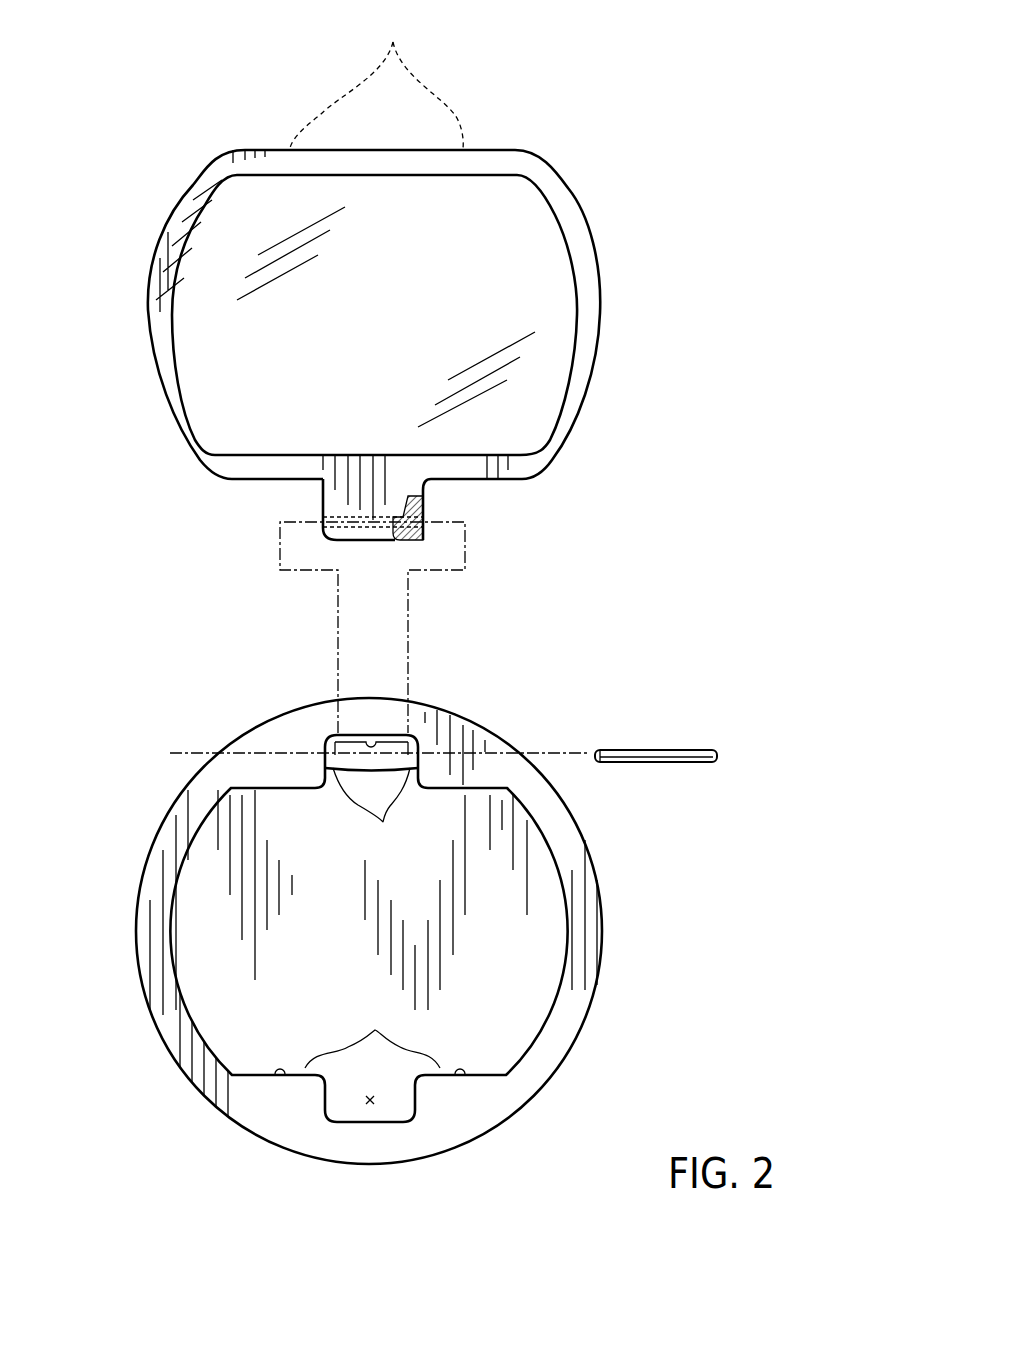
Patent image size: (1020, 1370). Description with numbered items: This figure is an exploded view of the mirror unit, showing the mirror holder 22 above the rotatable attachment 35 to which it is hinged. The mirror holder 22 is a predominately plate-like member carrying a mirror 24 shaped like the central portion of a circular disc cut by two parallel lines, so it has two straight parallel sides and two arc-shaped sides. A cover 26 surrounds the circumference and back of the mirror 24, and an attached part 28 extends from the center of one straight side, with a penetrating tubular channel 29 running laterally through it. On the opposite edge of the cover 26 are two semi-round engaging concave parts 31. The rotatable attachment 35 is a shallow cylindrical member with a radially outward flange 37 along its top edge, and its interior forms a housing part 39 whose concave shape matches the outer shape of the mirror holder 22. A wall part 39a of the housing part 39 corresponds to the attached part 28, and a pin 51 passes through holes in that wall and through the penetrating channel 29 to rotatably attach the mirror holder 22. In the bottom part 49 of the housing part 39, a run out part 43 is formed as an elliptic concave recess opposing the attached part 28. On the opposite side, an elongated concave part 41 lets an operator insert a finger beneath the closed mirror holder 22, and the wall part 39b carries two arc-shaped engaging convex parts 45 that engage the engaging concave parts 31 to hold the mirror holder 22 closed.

The mirror holder 22 is at (580, 172).
The mirror 24 is at (538, 260).
The cover 26 is at (583, 356).
The attached part 28 is at (335, 503).
The penetrating tubular channel 29 is at (423, 520).
The engaging concave parts 31 is at (376, 79).
The rotatable attachment 35 is at (533, 1158).
The flange 37 is at (580, 990).
The housing part 39 is at (483, 893).
The wall part 39a is at (374, 815).
The wall part 39b is at (372, 1032).
The elongated concave part 41 is at (368, 1105).
The run out part 43 is at (377, 742).
The engaging convex parts 45 is at (280, 1070).
The bottom part 49 is at (513, 1018).
The pin 51 is at (709, 766).